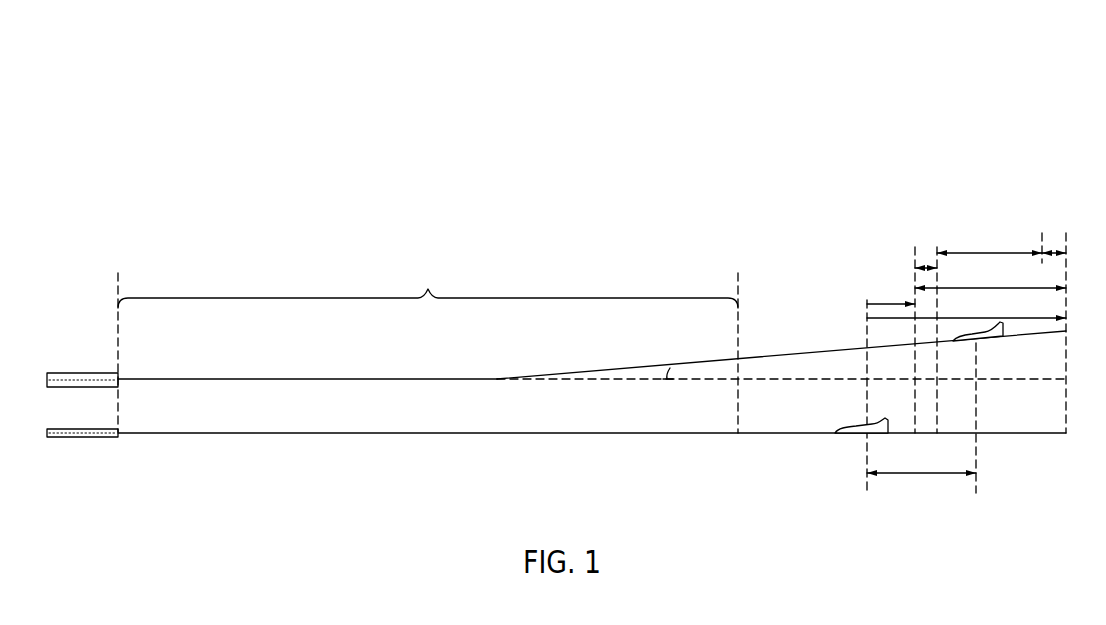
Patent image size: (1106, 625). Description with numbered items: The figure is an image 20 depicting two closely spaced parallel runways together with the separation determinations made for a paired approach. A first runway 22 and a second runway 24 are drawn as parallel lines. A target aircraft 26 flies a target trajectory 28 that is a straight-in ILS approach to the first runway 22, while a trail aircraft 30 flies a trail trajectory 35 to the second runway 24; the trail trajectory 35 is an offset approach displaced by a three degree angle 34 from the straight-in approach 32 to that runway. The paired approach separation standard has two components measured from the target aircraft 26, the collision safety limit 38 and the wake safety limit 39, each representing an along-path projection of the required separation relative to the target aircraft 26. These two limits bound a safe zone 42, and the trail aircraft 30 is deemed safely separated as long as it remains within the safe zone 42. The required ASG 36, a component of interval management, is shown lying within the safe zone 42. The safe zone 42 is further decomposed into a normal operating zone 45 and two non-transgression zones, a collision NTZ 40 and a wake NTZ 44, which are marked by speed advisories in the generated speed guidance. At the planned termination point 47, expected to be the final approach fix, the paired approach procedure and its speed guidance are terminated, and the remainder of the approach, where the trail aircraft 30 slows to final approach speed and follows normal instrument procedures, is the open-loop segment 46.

The image 20 is at (176, 82).
The first runway 22 is at (79, 438).
The second runway 24 is at (97, 373).
The target aircraft 26 is at (840, 434).
The target trajectory 28 is at (630, 433).
The trail aircraft 30 is at (996, 340).
The straight-in approach 32 is at (410, 378).
The 3 degree offset angle 34 is at (670, 368).
The trail trajectory 35 is at (720, 360).
The required ASG 36 is at (920, 473).
The collision safety limit (CSL) 38 is at (881, 304).
The wake safety limit (WSL) 39 is at (1050, 318).
The collision NTZ 40 is at (931, 266).
The safe zone 42 is at (972, 288).
The wake NTZ 44 is at (1050, 253).
The normal operating zone 45 is at (992, 253).
The open-loop segment 46 is at (428, 285).
The planned termination point 47 is at (738, 278).